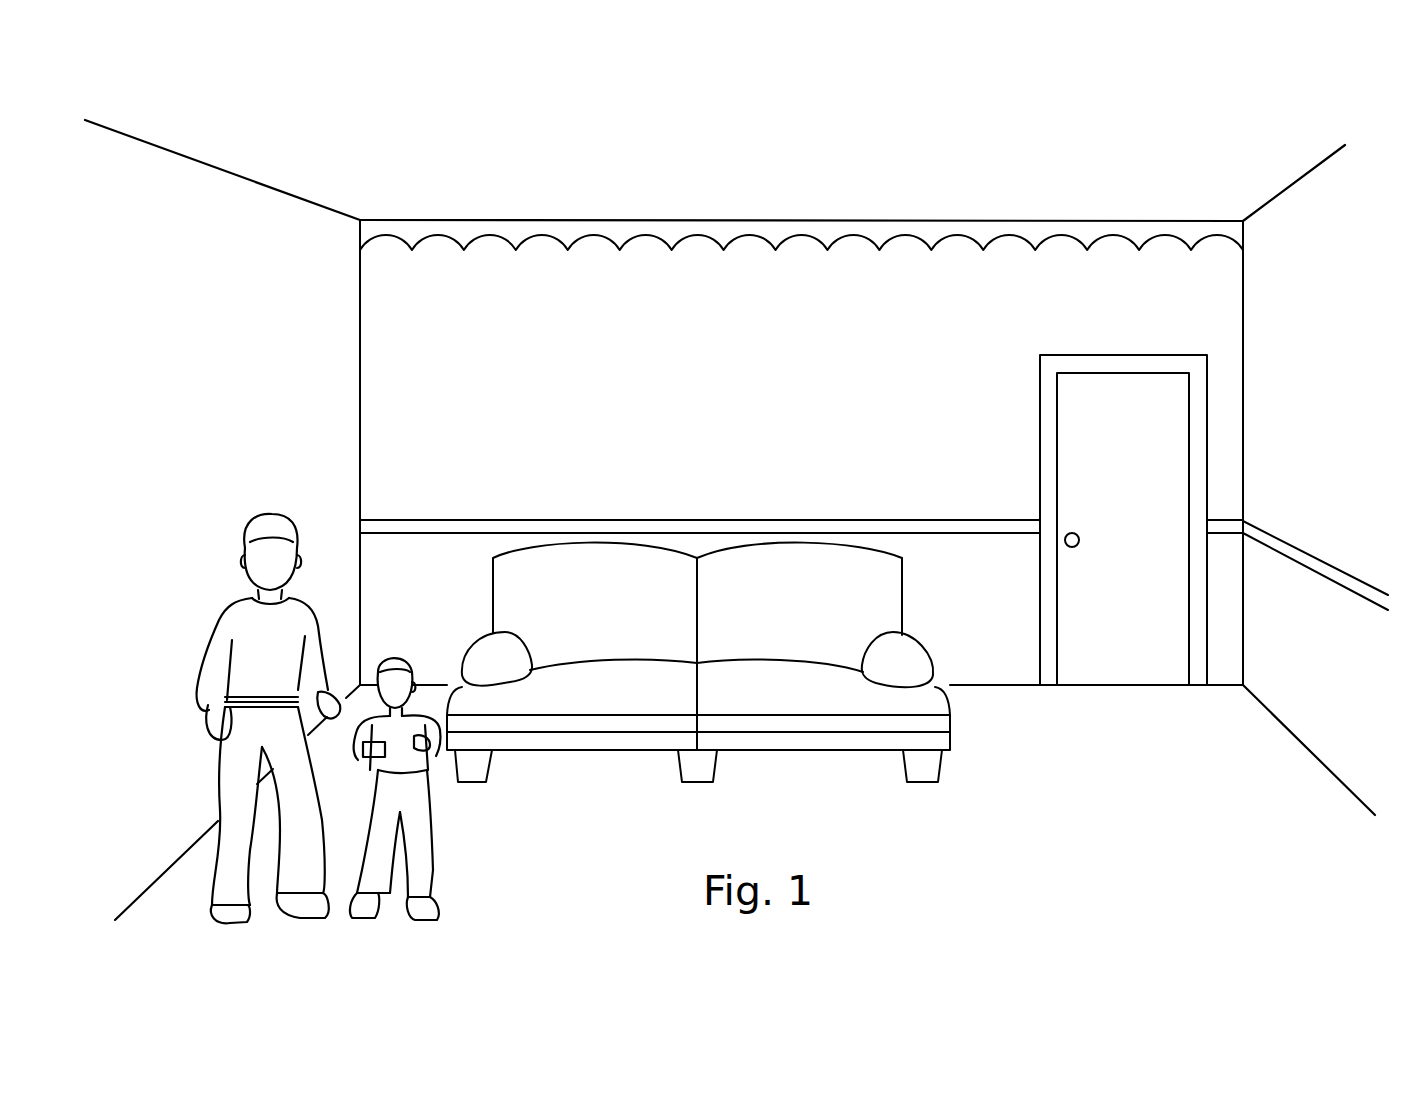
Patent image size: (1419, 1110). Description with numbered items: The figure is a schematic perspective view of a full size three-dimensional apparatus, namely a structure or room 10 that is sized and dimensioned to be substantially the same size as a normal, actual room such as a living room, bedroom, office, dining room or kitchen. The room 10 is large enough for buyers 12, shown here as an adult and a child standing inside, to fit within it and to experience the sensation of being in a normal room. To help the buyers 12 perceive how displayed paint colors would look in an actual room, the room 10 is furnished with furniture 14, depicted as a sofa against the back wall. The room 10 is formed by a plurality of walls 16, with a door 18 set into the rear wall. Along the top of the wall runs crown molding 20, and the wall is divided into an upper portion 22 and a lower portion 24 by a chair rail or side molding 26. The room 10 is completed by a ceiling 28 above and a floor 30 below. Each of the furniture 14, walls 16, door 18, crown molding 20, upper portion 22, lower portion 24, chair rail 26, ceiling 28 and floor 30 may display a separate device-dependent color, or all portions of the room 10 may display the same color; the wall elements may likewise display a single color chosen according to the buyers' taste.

The room 10 is at (183, 461).
The buyers 12 is at (218, 640).
The furniture 14 is at (617, 605).
The walls 16 is at (208, 325).
The door 18 is at (1142, 457).
The crown molding 20 is at (372, 233).
The upper portion 22 is at (778, 389).
The lower portion 24 is at (992, 615).
The chair rail 26 is at (360, 527).
The ceiling 28 is at (1032, 117).
The floor 30 is at (1170, 855).